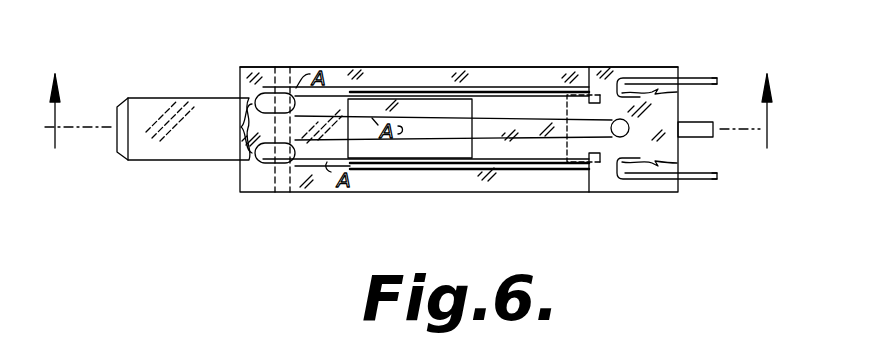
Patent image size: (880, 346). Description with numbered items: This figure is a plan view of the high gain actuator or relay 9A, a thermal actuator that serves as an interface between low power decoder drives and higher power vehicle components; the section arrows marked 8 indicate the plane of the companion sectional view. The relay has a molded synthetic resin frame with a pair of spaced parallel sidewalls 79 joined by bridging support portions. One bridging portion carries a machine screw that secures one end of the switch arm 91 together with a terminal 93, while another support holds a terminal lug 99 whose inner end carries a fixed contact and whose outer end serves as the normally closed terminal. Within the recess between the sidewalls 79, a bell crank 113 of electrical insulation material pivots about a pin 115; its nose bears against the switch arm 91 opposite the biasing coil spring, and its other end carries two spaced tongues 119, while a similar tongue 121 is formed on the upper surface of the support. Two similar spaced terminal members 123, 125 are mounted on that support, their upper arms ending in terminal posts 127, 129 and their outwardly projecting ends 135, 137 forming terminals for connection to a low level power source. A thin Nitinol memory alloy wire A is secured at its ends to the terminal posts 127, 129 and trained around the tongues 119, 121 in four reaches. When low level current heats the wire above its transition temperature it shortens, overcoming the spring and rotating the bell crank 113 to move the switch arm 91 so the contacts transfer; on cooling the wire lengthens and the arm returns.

The section line arrows (view 8) 8 is at (409, 121).
The high gain actuator or relay 9A is at (452, 63).
The sidewalls 79 is at (370, 68).
The switch arm 91 is at (537, 156).
The terminal 93 is at (707, 122).
The terminal lug 99 is at (185, 72).
The bell crank 113 is at (446, 153).
The pin 115 is at (283, 193).
The tongues 119 is at (228, 128).
The tongue 121 is at (608, 140).
The terminal member 123 is at (633, 79).
The terminal member 125 is at (653, 181).
The terminal post 127 is at (656, 93).
The terminal post 129 is at (656, 161).
The outwardly projecting end 135 is at (698, 78).
The outwardly projecting end 137 is at (707, 181).